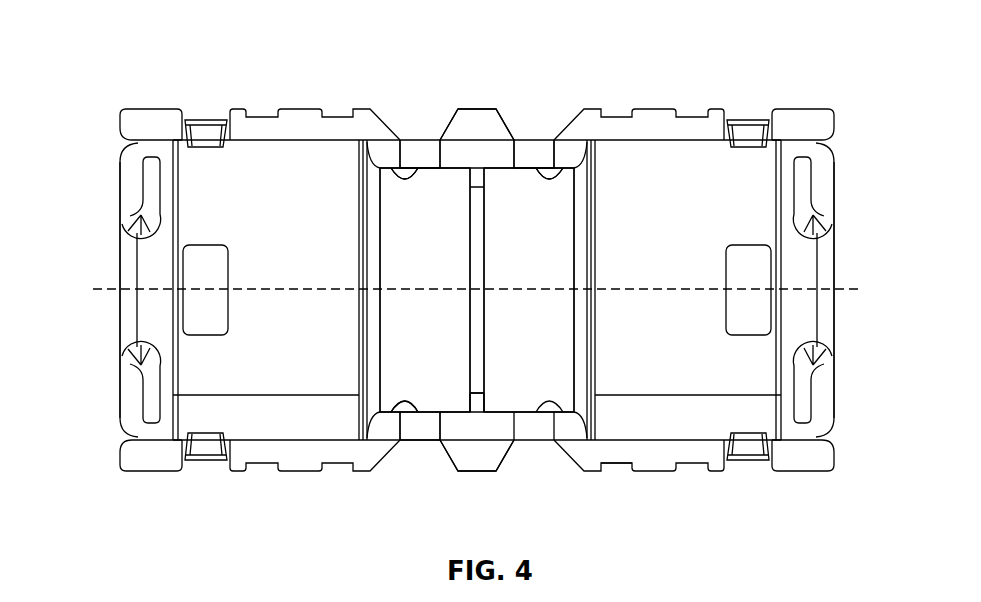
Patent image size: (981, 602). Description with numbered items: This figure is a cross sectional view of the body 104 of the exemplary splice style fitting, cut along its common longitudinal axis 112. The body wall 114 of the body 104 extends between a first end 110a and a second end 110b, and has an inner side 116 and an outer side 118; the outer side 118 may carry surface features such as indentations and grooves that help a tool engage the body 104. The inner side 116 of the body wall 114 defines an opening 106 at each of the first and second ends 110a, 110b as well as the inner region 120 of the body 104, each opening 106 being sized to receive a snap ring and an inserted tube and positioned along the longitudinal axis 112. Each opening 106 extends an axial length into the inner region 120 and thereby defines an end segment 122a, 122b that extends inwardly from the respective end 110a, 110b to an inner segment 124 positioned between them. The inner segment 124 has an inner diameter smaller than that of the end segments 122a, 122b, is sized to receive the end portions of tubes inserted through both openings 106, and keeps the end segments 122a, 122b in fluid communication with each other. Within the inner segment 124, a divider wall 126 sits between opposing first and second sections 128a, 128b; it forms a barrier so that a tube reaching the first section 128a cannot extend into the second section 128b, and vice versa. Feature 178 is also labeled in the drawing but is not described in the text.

The body 104 is at (810, 100).
The opening 106 is at (158, 323).
The first end 110a is at (120, 260).
The second end 110b is at (827, 260).
The longitudinal axis 112 is at (98, 291).
The body wall 114 is at (475, 128).
The inner side 116 is at (601, 460).
The outer side 118 is at (160, 108).
The inner region 120 is at (450, 251).
The first end segment 122a is at (262, 435).
The second end segment 122b is at (687, 432).
The inner segment 124 is at (407, 410).
The divider wall 126 is at (483, 400).
The first section 128a is at (405, 182).
The second section 128b is at (540, 182).
The window 178 is at (212, 271).